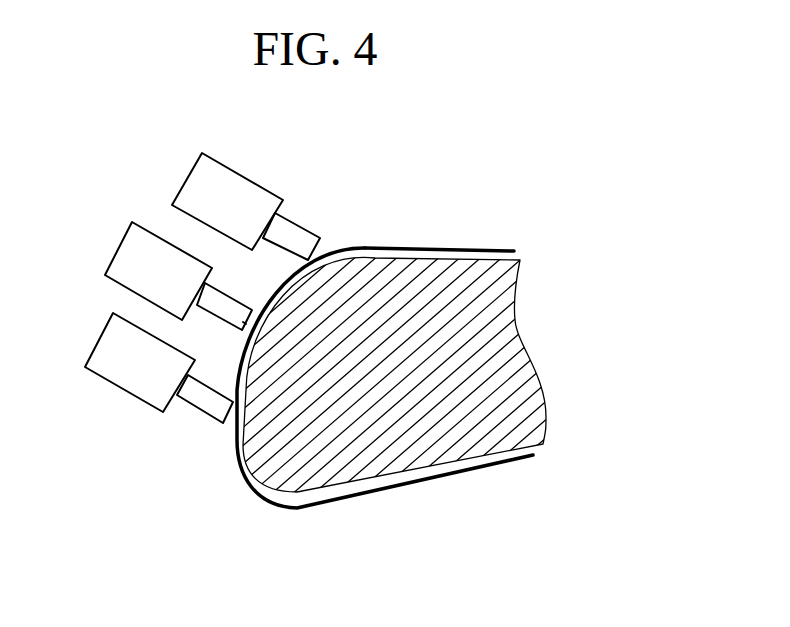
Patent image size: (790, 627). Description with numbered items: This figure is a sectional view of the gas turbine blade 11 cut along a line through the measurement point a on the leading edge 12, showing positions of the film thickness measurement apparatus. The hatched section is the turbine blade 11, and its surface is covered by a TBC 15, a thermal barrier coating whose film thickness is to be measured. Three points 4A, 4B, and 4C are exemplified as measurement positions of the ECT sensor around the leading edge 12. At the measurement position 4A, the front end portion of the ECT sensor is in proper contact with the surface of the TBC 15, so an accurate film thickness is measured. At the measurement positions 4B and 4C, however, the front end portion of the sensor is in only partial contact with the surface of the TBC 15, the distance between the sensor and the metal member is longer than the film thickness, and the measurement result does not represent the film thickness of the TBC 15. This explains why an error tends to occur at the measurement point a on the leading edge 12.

The measurement position of the ECT sensor 4A is at (128, 252).
The measurement position of the ECT sensor 4B is at (195, 190).
The measurement position of the ECT sensor 4C is at (108, 343).
The measurement point a is at (243, 322).
The turbine blade 11 is at (505, 325).
The leading edge 12 is at (253, 490).
The TBC 15 is at (448, 247).